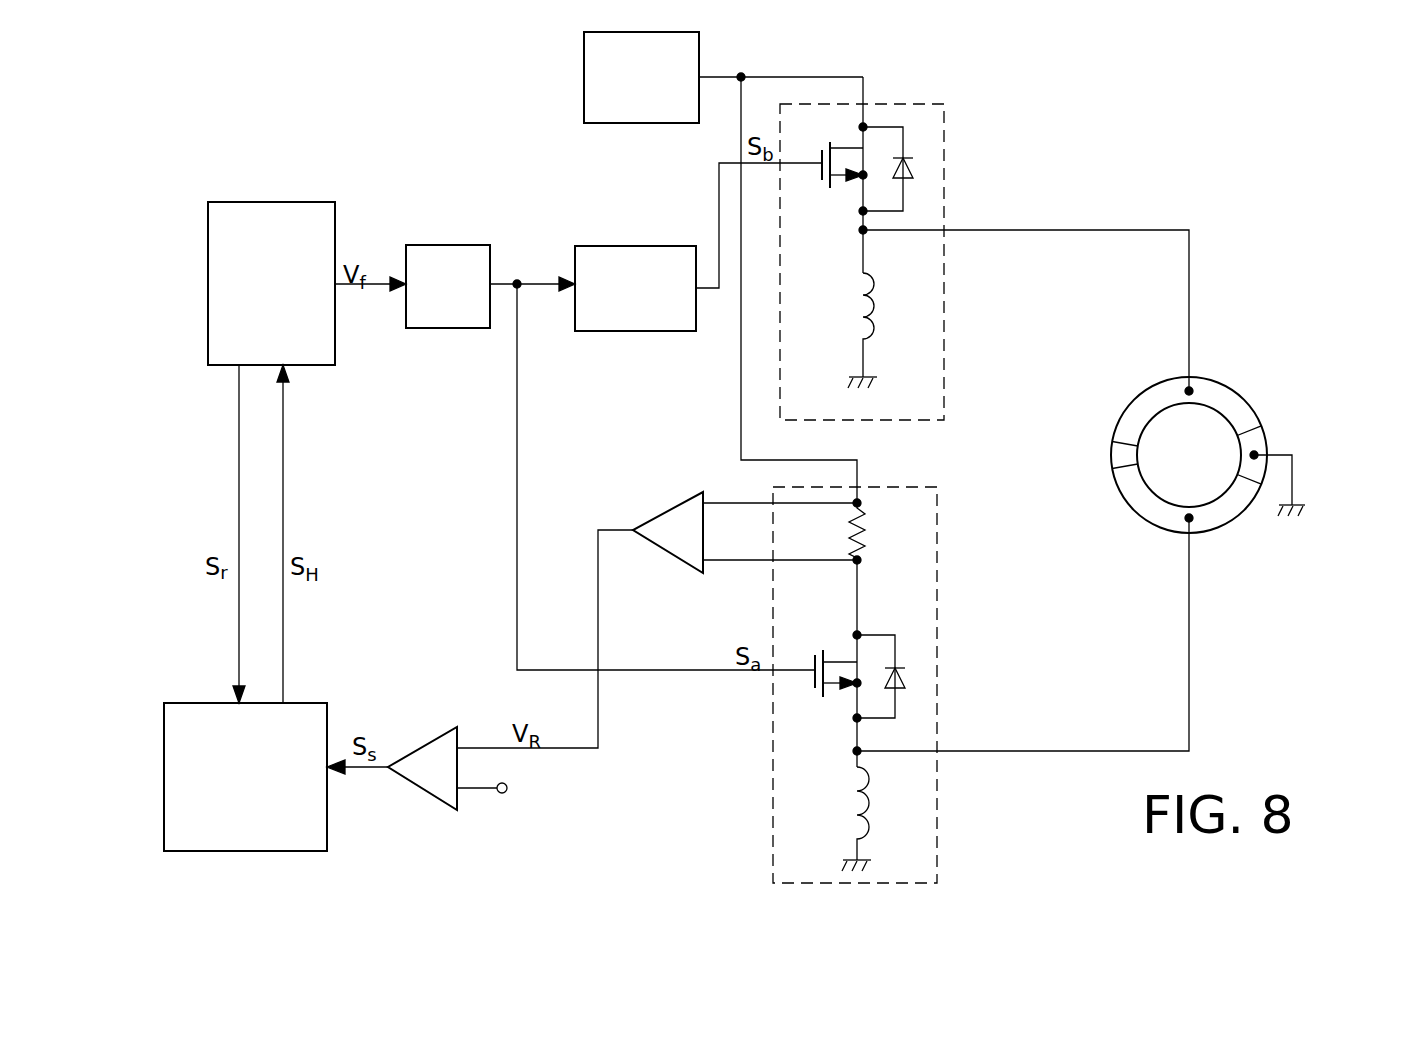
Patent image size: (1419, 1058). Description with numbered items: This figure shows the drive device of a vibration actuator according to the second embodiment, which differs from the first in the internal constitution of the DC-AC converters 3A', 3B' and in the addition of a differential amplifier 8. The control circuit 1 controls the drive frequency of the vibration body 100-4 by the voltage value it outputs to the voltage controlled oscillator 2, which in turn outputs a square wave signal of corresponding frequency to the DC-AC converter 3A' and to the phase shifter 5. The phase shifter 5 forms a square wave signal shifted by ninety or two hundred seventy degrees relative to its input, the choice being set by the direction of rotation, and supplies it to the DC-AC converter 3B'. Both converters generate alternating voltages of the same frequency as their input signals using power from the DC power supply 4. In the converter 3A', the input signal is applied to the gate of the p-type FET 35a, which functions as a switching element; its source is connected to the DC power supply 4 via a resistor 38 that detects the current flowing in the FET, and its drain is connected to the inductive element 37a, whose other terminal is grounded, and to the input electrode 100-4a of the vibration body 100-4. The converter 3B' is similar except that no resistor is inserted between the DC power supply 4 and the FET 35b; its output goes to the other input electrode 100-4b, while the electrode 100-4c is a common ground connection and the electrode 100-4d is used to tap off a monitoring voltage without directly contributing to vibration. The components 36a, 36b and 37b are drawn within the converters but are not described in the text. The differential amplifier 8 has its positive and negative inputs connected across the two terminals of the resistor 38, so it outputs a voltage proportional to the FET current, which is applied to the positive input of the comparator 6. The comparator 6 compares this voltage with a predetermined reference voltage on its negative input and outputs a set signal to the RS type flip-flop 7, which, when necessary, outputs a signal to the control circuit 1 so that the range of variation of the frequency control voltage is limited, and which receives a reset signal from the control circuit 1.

The control circuit 1 is at (266, 202).
The voltage controlled oscillator (VCO) 2 is at (460, 245).
The DC-AC converter 3A' is at (894, 675).
The DC-AC converter 3B' is at (913, 243).
The DC power supply 4 is at (584, 64).
The phase shifter 5 is at (644, 246).
The comparator 6 is at (418, 746).
The RS-FF (RS type flip-flop) 7 is at (212, 703).
The differential amplifier 8 is at (662, 510).
The p-type FET 35a is at (816, 650).
The FET 35b is at (828, 192).
The diode 36a is at (898, 690).
The diode 36b is at (912, 172).
The inductive element 37a is at (856, 800).
The inductor coil 37b is at (878, 312).
The resistor 38 is at (866, 548).
The vibration body 100-4 is at (1197, 416).
The input electrode 100-4a is at (1232, 520).
The input electrode 100-4b is at (1234, 394).
The common ground connection electrode 100-4c is at (1266, 446).
The monitoring voltage electrode 100-4d is at (1116, 456).